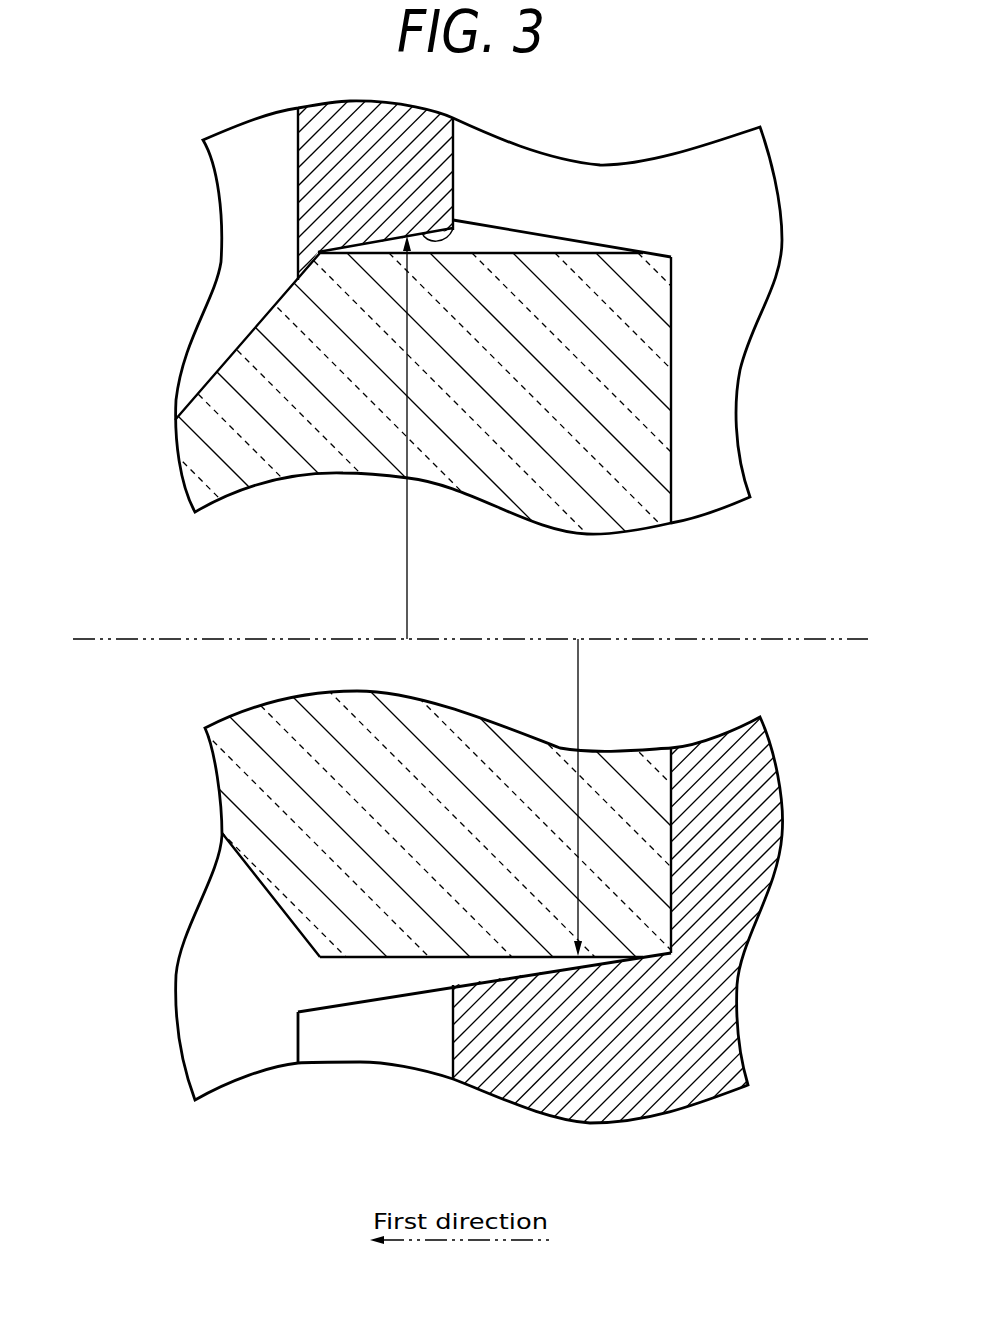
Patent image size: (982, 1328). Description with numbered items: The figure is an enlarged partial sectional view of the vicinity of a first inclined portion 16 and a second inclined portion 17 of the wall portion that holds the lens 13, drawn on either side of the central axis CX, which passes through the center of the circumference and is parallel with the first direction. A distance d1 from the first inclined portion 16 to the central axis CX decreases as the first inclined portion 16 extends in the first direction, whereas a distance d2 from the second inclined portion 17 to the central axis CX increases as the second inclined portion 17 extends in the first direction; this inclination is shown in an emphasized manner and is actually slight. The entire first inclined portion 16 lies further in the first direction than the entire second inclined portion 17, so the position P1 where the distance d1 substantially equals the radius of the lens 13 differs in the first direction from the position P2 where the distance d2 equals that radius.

The lens 13 is at (193, 449).
The first inclined portion 16 is at (453, 219).
The second inclined portion 17 is at (490, 977).
The position of the first inclined portion P1 is at (319, 252).
The position of the second inclined portion P2 is at (645, 955).
The distance from the first inclined portion to the central axis d1 is at (422, 437).
The distance from the second inclined portion to the central axis d2 is at (592, 797).
The central axis CX is at (788, 639).